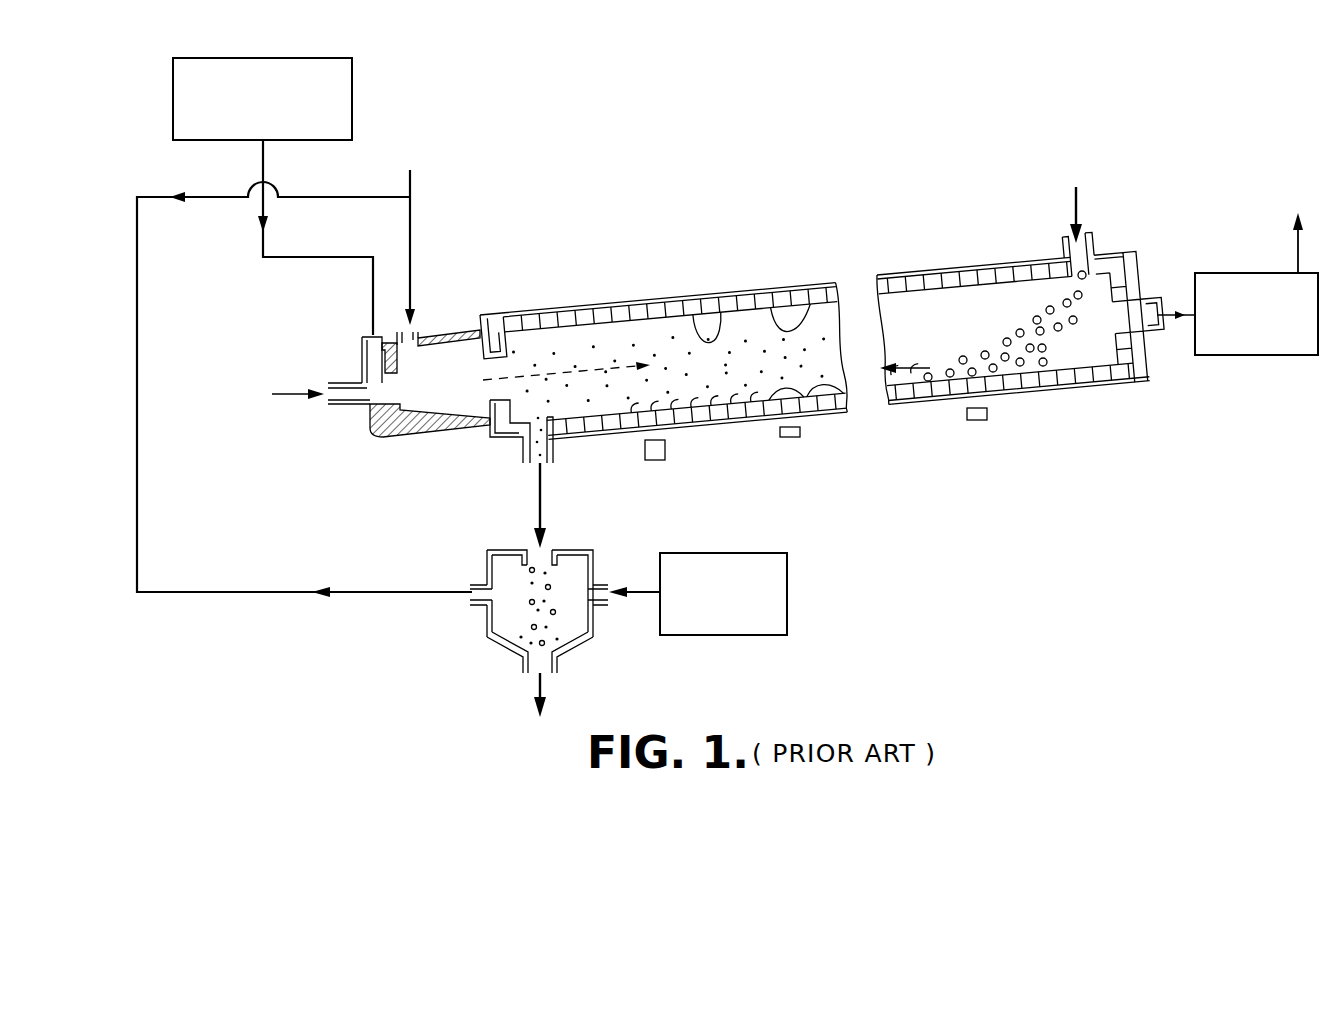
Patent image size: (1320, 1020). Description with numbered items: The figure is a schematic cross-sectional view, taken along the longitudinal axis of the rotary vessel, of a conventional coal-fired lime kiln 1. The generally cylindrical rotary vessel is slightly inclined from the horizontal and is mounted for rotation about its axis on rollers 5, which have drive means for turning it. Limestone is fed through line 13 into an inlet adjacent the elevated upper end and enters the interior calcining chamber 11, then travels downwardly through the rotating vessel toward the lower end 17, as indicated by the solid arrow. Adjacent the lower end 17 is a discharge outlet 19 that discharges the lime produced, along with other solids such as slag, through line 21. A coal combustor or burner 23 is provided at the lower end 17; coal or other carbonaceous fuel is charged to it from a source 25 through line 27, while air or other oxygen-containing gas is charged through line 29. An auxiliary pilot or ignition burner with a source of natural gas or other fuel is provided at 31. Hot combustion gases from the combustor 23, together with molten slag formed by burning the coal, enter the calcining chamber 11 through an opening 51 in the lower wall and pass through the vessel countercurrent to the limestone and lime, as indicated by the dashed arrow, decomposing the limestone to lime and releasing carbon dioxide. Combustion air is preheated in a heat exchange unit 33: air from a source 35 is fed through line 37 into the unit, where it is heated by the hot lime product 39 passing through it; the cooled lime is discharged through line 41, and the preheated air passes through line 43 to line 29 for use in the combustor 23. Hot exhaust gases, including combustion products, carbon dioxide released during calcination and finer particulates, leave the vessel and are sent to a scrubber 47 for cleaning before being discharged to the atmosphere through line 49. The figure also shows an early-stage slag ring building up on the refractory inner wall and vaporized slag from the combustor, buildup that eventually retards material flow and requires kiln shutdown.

The coal-fired lime kiln 1 is at (664, 339).
The rollers 5 is at (790, 440).
The calcining chamber 11 is at (916, 342).
The line 13 is at (1078, 197).
The lower end 17 is at (468, 321).
The discharge outlet 19 is at (555, 453).
The line 21 is at (543, 500).
The coal combustor 23 is at (448, 432).
The source 25 is at (353, 117).
The line 27 is at (348, 257).
The line 29 is at (411, 250).
The auxiliary pilot or ignition burner 31 is at (345, 383).
The heat exchange unit 33 is at (592, 552).
The air source 35 is at (788, 597).
The line 37 is at (648, 598).
The hot lime product 39 is at (533, 628).
The line 41 is at (545, 683).
The line 43 is at (139, 513).
The scrubber 47 is at (1306, 357).
The line 49 is at (1297, 250).
The opening 51 is at (472, 378).